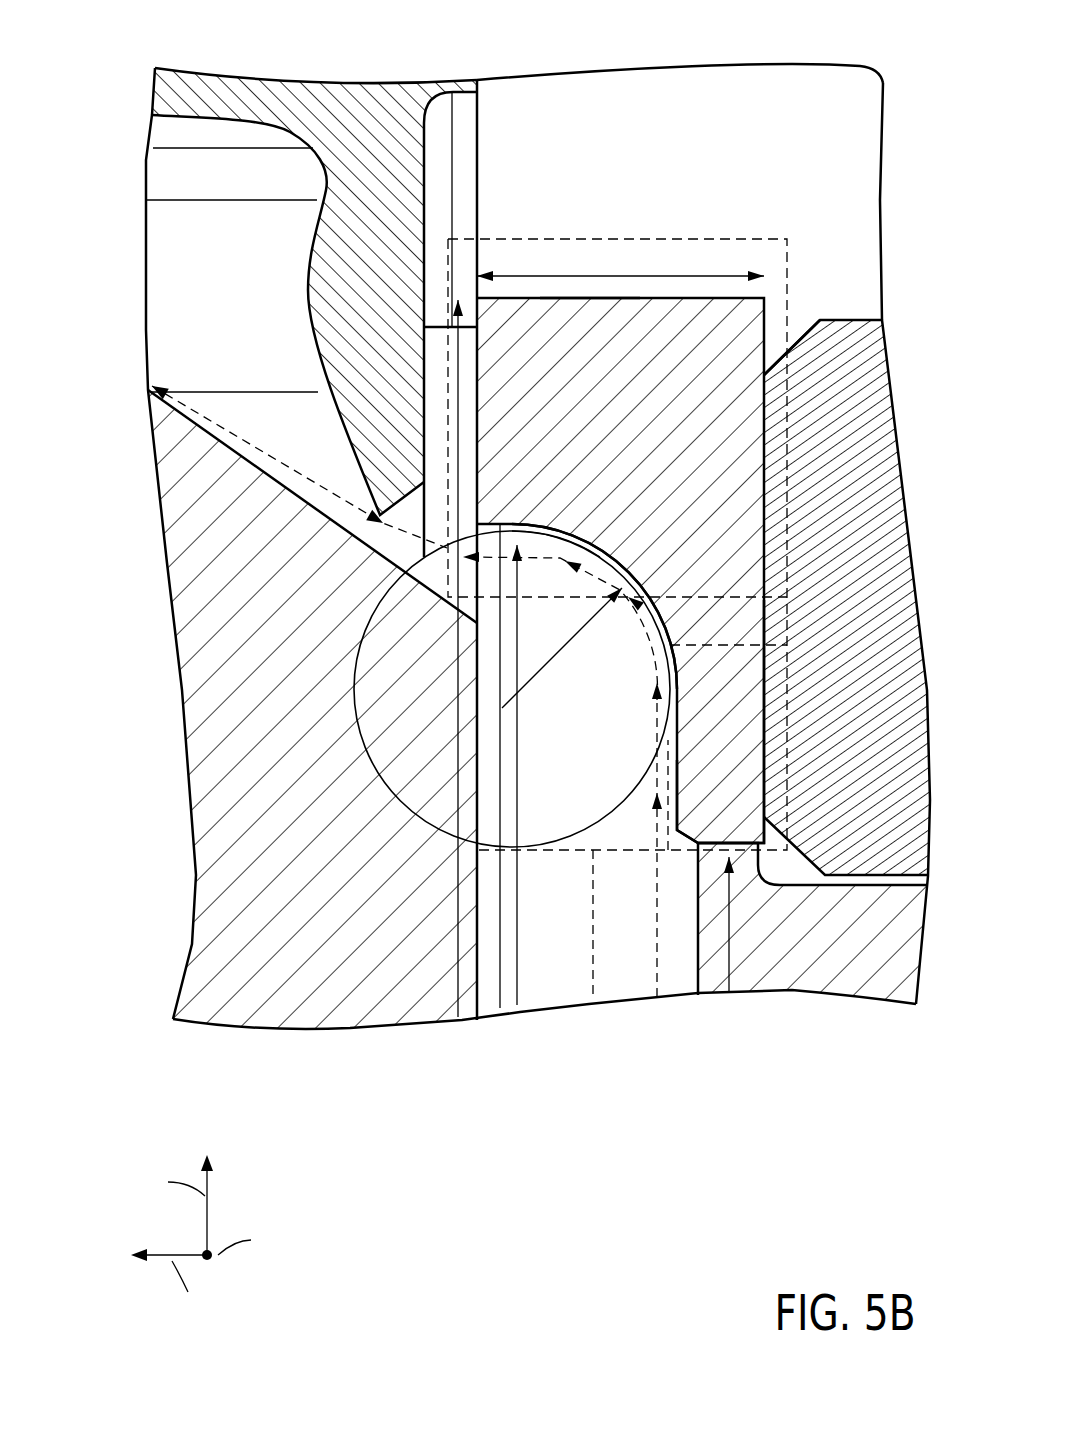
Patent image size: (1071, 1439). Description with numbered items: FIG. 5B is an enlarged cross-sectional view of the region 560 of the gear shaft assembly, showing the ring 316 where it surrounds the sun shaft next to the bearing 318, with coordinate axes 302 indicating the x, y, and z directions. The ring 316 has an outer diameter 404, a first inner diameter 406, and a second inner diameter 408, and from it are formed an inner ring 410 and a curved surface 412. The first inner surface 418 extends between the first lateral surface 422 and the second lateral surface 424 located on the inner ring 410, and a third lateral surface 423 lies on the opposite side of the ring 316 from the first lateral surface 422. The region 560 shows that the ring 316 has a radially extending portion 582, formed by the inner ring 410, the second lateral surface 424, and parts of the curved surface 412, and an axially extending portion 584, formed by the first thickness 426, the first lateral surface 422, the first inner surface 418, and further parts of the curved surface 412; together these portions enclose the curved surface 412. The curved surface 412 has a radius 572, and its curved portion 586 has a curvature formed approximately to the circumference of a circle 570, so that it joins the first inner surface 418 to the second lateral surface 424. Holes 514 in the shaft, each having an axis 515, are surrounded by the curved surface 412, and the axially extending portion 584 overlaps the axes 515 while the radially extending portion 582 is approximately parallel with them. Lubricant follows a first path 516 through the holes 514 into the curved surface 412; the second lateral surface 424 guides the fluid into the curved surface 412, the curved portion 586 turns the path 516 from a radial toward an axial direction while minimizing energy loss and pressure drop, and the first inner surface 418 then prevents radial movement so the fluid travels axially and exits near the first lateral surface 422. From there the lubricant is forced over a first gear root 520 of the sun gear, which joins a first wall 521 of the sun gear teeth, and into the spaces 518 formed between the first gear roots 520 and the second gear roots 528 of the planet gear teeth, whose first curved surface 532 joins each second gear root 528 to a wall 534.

The coordinate system 302 is at (142, 1225).
The ring 316 is at (668, 232).
The bearing 318 is at (851, 333).
The outer diameter 404 is at (458, 1012).
The first inner diameter 406 is at (503, 1000).
The second inner diameter 408 is at (731, 960).
The inner ring 410 is at (716, 768).
The curved surface 412 is at (543, 753).
The first inner surface 418 is at (527, 507).
The first lateral surface 422 is at (473, 340).
The third lateral surface 423 is at (790, 348).
The second lateral surface 424 is at (681, 705).
The first thickness 426 is at (586, 298).
The holes 514 is at (698, 993).
The axis 515 is at (593, 965).
The first path 516 is at (654, 966).
The spaces 518 is at (232, 160).
The first gear root 520 is at (443, 603).
The first wall 521 is at (433, 336).
The second gear root 528 is at (450, 92).
The first curved surface 532 is at (167, 93).
The wall 534 is at (348, 228).
The region 560 is at (888, 133).
The circle 570 is at (428, 831).
The radius 572 is at (545, 665).
The radially extending portion 582 is at (793, 627).
The axially extending portion 584 is at (553, 232).
The curved portion 586 is at (608, 563).